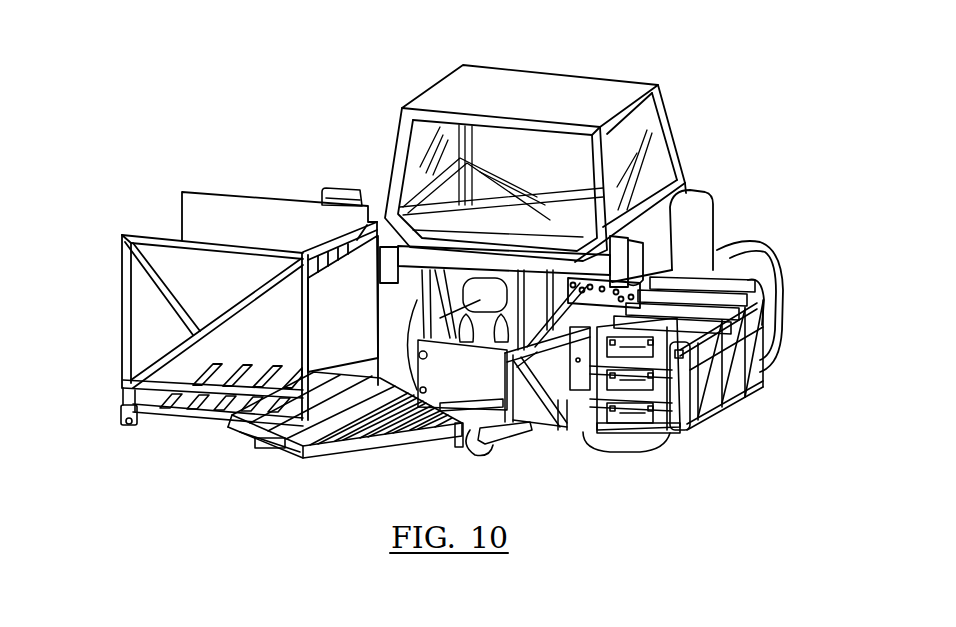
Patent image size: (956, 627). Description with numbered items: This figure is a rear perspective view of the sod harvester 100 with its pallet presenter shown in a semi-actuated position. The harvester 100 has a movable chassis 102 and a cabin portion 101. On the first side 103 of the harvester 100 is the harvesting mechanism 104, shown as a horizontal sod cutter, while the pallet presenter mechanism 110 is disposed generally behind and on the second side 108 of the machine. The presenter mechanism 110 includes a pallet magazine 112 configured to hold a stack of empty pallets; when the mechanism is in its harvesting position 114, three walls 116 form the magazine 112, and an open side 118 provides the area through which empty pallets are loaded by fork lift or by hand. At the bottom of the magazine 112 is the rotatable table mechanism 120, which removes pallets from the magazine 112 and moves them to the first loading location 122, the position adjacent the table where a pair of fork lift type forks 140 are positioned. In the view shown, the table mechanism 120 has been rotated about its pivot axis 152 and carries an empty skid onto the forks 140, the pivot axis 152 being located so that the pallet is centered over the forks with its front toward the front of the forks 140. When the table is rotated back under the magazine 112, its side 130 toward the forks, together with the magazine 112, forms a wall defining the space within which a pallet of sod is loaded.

The harvester 100 is at (516, 42).
The cabin portion 101 is at (558, 85).
The movable chassis 102 is at (697, 203).
The first side 103 is at (668, 208).
The harvesting mechanism 104 is at (717, 417).
The second side 108 is at (391, 168).
The pallet presenter mechanism 110 is at (205, 207).
The pallet magazine 112 is at (130, 242).
The harvesting position 114 is at (168, 428).
The walls 116 is at (240, 208).
The open side 118 is at (168, 215).
The rotatable table mechanism 120 is at (330, 463).
The first loading location 122 is at (449, 457).
The side of the table mechanism 130 is at (472, 434).
The forks 140 is at (483, 440).
The pivot axis 152 is at (343, 188).